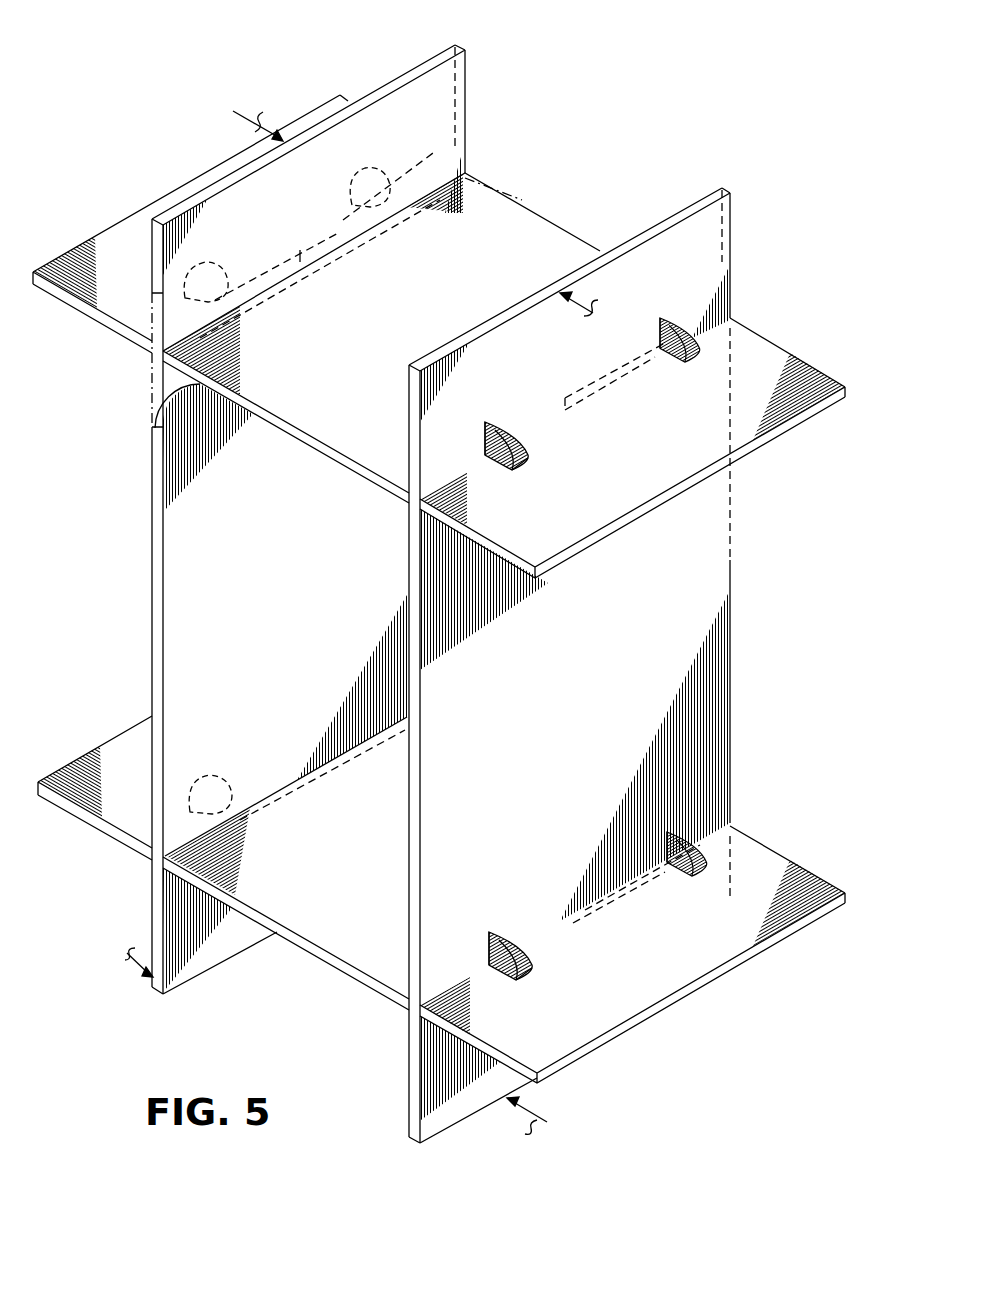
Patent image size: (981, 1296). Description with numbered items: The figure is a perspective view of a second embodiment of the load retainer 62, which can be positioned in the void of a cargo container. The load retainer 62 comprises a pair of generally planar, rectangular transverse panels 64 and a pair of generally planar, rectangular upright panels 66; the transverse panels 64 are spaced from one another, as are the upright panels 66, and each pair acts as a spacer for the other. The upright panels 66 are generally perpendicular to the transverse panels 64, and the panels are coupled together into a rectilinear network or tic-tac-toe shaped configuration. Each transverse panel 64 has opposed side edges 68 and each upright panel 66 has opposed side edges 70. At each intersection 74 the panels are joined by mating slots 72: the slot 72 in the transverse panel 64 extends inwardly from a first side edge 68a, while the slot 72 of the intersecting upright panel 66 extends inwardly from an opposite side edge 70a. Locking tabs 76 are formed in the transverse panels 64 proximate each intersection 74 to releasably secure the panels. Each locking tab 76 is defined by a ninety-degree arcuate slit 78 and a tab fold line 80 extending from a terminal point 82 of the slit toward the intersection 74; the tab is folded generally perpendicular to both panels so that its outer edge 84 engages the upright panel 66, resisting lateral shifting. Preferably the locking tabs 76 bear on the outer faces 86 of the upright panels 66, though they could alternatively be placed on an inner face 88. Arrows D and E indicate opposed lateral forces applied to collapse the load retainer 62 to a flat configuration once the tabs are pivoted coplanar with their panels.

The load retainer 62 is at (103, 960).
The transverse panel 64 is at (560, 213).
The upright panel 66 is at (466, 95).
The side edge 68 is at (597, 250).
The first side edge 68a is at (300, 430).
The side edge 70 is at (458, 46).
The opposite side edge 70a is at (152, 272).
The slot 72 is at (150, 355).
The intersection 74 is at (298, 262).
The locking tab 76 is at (385, 163).
The arcuate slit 78 is at (348, 200).
The tab fold line 80 is at (492, 993).
The terminal point 82 is at (692, 376).
The outer edge 84 is at (474, 958).
The outer face 86 is at (581, 342).
The inner face 88 is at (283, 206).